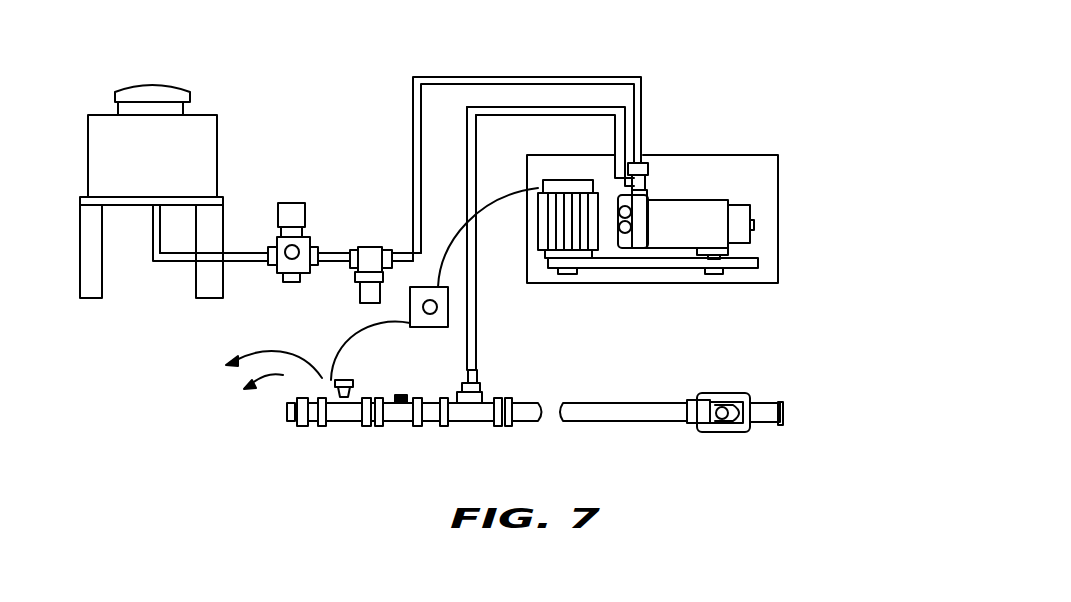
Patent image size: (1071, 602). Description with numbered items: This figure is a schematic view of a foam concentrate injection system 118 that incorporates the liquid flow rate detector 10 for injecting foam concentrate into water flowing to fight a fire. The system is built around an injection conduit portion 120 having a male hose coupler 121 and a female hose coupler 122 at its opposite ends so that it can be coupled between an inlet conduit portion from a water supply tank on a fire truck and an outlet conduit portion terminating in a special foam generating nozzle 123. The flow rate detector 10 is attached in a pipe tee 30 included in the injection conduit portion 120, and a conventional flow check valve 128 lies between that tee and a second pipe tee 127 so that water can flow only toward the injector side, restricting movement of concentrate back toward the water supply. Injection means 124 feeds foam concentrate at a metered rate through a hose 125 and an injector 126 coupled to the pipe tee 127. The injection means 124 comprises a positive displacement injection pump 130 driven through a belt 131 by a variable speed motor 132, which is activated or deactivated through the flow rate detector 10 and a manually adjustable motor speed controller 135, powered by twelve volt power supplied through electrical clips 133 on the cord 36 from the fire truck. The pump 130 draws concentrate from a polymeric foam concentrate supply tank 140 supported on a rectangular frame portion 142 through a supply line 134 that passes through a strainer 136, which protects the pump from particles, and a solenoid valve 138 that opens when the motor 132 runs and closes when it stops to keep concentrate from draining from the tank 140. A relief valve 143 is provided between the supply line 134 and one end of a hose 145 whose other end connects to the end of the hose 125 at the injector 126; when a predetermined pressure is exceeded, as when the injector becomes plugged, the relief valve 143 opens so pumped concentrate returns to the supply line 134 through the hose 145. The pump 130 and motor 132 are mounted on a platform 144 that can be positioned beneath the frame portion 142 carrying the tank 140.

The liquid flow rate detector 10 is at (346, 374).
The pipe tee 30 is at (424, 415).
The cord 36 is at (322, 382).
The foam concentrate injection system 118 is at (690, 108).
The injection conduit portion 120 is at (538, 398).
The male hose coupler 121 is at (508, 426).
The female hose coupler 122 is at (292, 422).
The foam generating nozzle 123 is at (767, 418).
The injection means 124 is at (736, 153).
The hose 125 is at (478, 333).
The injector 126 is at (475, 377).
The pipe tee 127 is at (477, 423).
The flow check valve 128 is at (402, 421).
The positive displacement injection pump 130 is at (717, 237).
The belt 131 is at (681, 268).
The variable speed motor 132 is at (577, 195).
The electrical clips 133 is at (236, 364).
The supply line 134 is at (240, 253).
The motor speed controller 135 is at (430, 328).
The strainer 136 is at (372, 250).
The solenoid valve 138 is at (307, 247).
The foam concentrate supply tank 140 is at (203, 132).
The rectangular frame portion 142 is at (85, 268).
The relief valve 143 is at (642, 180).
The platform 144 is at (782, 173).
The hose 145 is at (490, 108).